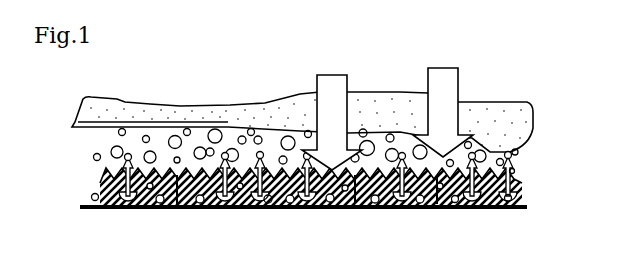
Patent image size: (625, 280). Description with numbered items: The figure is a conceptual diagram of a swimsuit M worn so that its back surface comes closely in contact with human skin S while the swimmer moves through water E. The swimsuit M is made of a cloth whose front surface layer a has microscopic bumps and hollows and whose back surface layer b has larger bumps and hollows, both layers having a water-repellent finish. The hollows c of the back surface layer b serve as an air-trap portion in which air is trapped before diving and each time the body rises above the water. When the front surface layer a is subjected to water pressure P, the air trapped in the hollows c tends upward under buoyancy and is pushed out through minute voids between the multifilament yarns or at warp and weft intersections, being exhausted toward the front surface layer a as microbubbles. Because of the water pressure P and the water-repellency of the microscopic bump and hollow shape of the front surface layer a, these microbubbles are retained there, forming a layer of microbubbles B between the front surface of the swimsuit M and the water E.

The water pressure P is at (470, 64).
The water E is at (545, 118).
The layer of microbubbles B is at (84, 152).
The swimsuit M is at (92, 181).
The human skin S is at (510, 213).
The front surface layer a is at (530, 172).
The back surface layer b is at (537, 197).
The hollows c is at (270, 209).